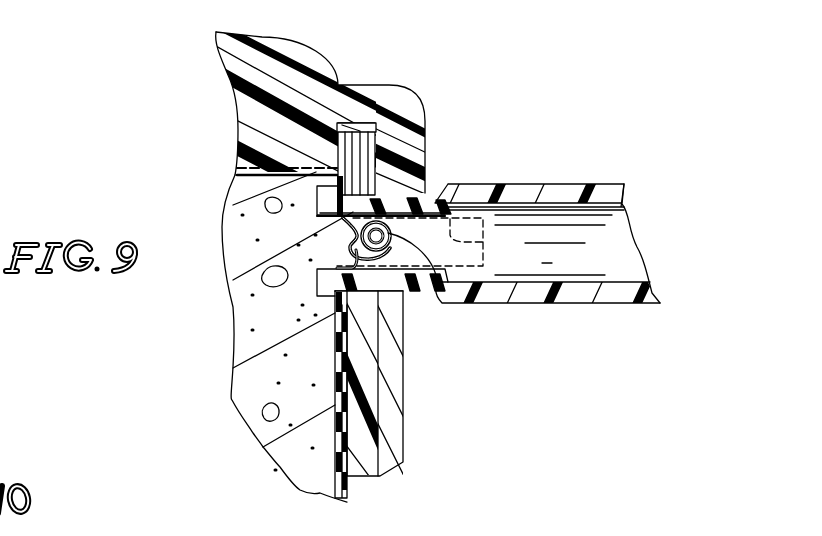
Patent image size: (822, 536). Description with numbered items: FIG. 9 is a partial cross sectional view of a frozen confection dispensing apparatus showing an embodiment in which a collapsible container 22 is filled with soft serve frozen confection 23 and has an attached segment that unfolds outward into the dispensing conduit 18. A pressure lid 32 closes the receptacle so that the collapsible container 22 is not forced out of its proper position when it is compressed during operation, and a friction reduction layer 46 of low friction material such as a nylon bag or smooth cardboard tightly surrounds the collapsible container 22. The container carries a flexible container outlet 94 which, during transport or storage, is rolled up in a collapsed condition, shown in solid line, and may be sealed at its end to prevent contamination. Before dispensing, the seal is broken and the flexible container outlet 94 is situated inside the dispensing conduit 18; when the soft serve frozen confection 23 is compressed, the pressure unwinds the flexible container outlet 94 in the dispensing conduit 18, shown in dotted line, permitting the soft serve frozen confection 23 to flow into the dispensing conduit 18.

The dispensing conduit 18 is at (555, 182).
The collapsible container 22 is at (333, 366).
The soft serve frozen confection 23 is at (268, 337).
The pressure lid 32 is at (300, 57).
The friction reduction layer 46 is at (348, 445).
The flexible container outlet 94 is at (487, 246).